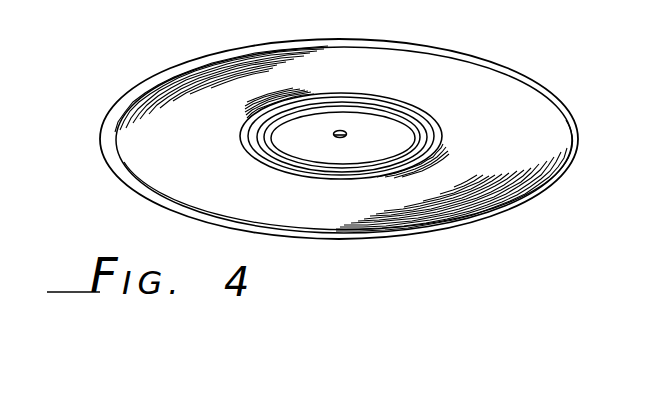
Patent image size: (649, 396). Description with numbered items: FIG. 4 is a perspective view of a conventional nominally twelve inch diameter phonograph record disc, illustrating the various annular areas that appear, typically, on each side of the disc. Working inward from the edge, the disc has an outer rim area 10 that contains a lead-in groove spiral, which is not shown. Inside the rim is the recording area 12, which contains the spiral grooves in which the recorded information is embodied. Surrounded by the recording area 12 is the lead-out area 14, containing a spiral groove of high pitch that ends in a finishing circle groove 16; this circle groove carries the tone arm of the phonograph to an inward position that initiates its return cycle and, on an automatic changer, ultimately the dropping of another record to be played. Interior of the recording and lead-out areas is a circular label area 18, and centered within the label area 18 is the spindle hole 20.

The outer rim area 10 is at (574, 145).
The recording area 12 is at (486, 203).
The lead-out area 14 is at (427, 130).
The finishing circle groove 16 is at (402, 118).
The label area 18 is at (324, 112).
The spindle hole 20 is at (343, 132).